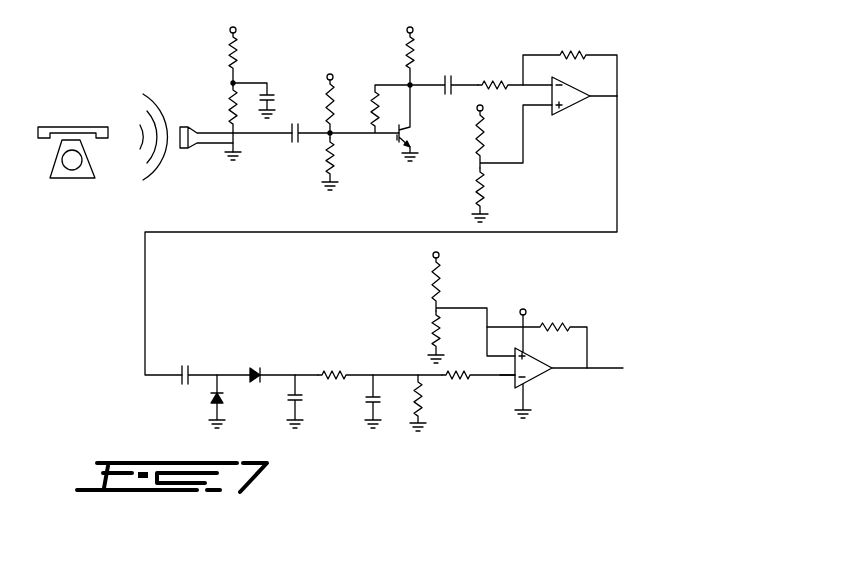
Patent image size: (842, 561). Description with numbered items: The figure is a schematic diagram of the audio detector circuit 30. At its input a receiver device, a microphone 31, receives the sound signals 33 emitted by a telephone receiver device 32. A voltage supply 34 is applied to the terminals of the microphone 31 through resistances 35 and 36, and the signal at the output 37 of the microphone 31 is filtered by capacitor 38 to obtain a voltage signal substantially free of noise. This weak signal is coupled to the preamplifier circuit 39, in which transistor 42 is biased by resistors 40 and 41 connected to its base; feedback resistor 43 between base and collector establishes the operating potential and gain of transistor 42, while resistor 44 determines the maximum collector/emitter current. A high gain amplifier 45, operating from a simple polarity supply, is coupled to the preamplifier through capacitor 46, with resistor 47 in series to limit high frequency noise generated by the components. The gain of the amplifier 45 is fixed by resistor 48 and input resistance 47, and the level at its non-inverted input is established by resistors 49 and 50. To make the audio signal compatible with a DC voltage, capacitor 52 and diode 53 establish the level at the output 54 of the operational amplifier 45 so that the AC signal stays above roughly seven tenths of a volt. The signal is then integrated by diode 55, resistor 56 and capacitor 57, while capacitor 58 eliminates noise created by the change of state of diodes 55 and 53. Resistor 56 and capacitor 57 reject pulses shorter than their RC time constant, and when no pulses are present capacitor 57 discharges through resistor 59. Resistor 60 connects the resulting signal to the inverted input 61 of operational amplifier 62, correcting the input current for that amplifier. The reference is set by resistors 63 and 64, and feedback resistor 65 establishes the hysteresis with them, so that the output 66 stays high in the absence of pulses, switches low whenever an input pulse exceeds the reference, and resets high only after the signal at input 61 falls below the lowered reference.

The audio detector circuit 30 is at (622, 148).
The microphone 31 is at (187, 150).
The telephone receiver device 32 is at (70, 123).
The sound signals 33 is at (143, 97).
The voltage supply 34 is at (228, 30).
The resistance 35 is at (240, 68).
The resistance 36 is at (230, 109).
The output of the microphone 37 is at (254, 136).
The capacitor 38 is at (299, 146).
The preamplifier circuit 39 is at (397, 143).
The resistor 40 is at (327, 100).
The resistor 41 is at (333, 160).
The transistor 42 is at (408, 135).
The feedback resistor 43 is at (371, 110).
The resistor 44 is at (407, 68).
The high gain amplifier 45 is at (568, 104).
The capacitor 46 is at (447, 79).
The resistor 47 is at (495, 81).
The resistor 48 is at (562, 54).
The resistor 49 is at (498, 141).
The resistor 50 is at (482, 198).
The capacitor 52 is at (178, 380).
The diode 53 is at (223, 398).
The output of the operational amplifier 54 is at (597, 98).
The diode 55 is at (251, 368).
The resistor 56 is at (332, 350).
The capacitor 57 is at (356, 402).
The capacitor 58 is at (303, 402).
The resistor 59 is at (425, 400).
The resistor 60 is at (457, 383).
The inverted input 61 is at (503, 384).
The operational amplifier 62 is at (530, 368).
The resistor 63 is at (440, 280).
The resistor 64 is at (432, 337).
The feedback resistor 65 is at (564, 326).
The output 66 is at (603, 368).